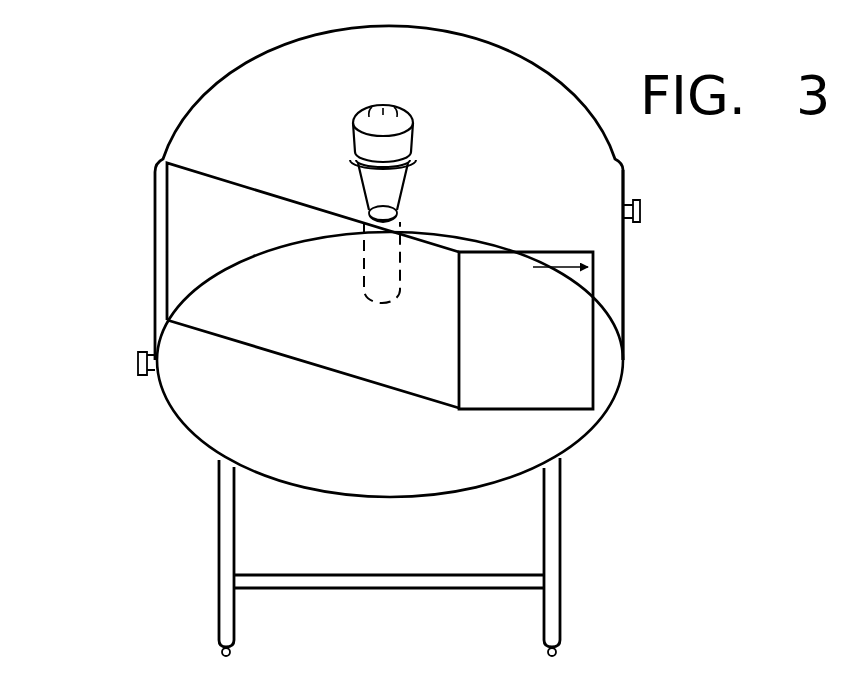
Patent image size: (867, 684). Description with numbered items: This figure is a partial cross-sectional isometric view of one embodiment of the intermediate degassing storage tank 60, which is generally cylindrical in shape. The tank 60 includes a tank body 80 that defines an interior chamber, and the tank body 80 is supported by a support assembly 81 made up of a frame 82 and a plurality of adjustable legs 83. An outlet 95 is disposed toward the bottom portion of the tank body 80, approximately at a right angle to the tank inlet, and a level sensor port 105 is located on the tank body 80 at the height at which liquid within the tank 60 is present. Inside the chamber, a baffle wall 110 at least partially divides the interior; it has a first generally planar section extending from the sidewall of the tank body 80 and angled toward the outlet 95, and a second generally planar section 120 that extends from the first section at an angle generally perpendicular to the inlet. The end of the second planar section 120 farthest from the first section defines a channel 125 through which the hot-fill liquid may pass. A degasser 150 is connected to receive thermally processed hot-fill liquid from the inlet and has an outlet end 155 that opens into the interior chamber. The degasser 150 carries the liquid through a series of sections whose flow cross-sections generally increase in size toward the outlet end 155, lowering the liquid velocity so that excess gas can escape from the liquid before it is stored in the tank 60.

The degassing storage tank 60 is at (122, 246).
The tank body 80 is at (612, 177).
The support assembly 81 is at (388, 557).
The frame 82 is at (382, 590).
The adjustable legs 83 is at (218, 616).
The outlet 95 is at (137, 362).
The level sensor port 105 is at (642, 208).
The baffle wall 110 is at (231, 234).
The second generally planar section 120 is at (545, 364).
The channel 125 is at (630, 266).
The degasser 150 is at (418, 182).
The outlet end 155 is at (420, 117).